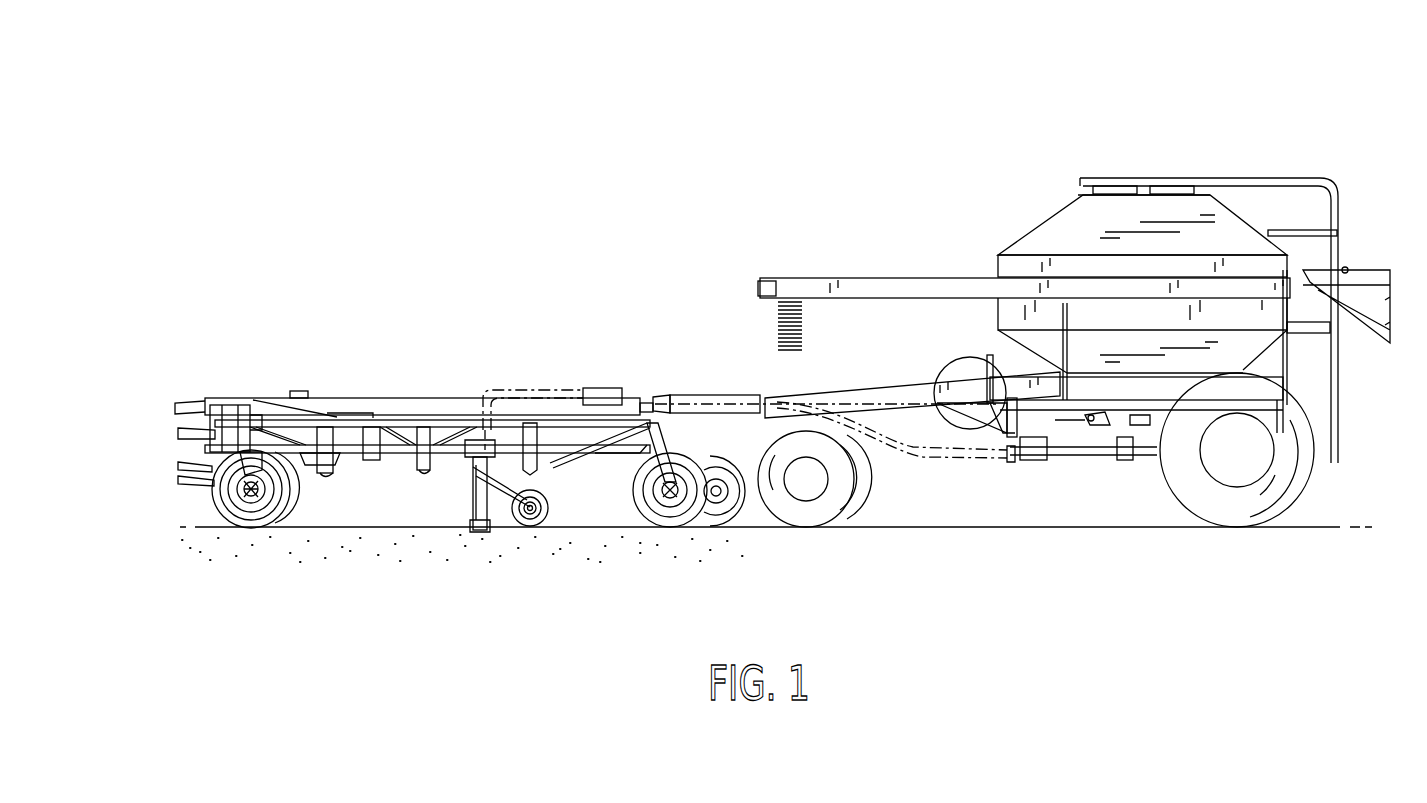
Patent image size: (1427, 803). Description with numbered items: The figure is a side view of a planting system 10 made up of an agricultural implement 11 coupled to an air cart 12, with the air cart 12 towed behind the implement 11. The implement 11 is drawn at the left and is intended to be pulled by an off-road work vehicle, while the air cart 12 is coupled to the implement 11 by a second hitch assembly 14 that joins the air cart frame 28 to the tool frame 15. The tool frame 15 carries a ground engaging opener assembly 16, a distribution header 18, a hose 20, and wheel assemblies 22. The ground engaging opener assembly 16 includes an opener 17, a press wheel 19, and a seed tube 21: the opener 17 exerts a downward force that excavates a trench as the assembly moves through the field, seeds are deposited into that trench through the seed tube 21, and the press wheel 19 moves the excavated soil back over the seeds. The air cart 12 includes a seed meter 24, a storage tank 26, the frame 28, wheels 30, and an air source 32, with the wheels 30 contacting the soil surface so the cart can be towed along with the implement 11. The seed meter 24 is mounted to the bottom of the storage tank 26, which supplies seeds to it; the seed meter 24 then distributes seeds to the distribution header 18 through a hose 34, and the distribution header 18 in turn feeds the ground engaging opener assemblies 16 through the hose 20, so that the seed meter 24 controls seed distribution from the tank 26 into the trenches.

The planting system 10 is at (378, 205).
The agricultural implement 11 is at (296, 368).
The air cart 12 is at (1050, 153).
The second hitch assembly 14 is at (647, 402).
The tool frame 15 is at (470, 402).
The ground engaging opener assembly 16 is at (453, 513).
The opener 17 is at (467, 529).
The distribution header 18 is at (607, 388).
The press wheel 19 is at (553, 510).
The hose 20 is at (543, 388).
The seed tube 21 is at (485, 450).
The wheel assemblies 22 is at (251, 528).
The seed meter 24 is at (1100, 420).
The storage tank 26 is at (1066, 218).
The frame 28 is at (876, 386).
The wheels 30 is at (873, 485).
The air source 32 is at (948, 366).
The hose 34 is at (923, 458).